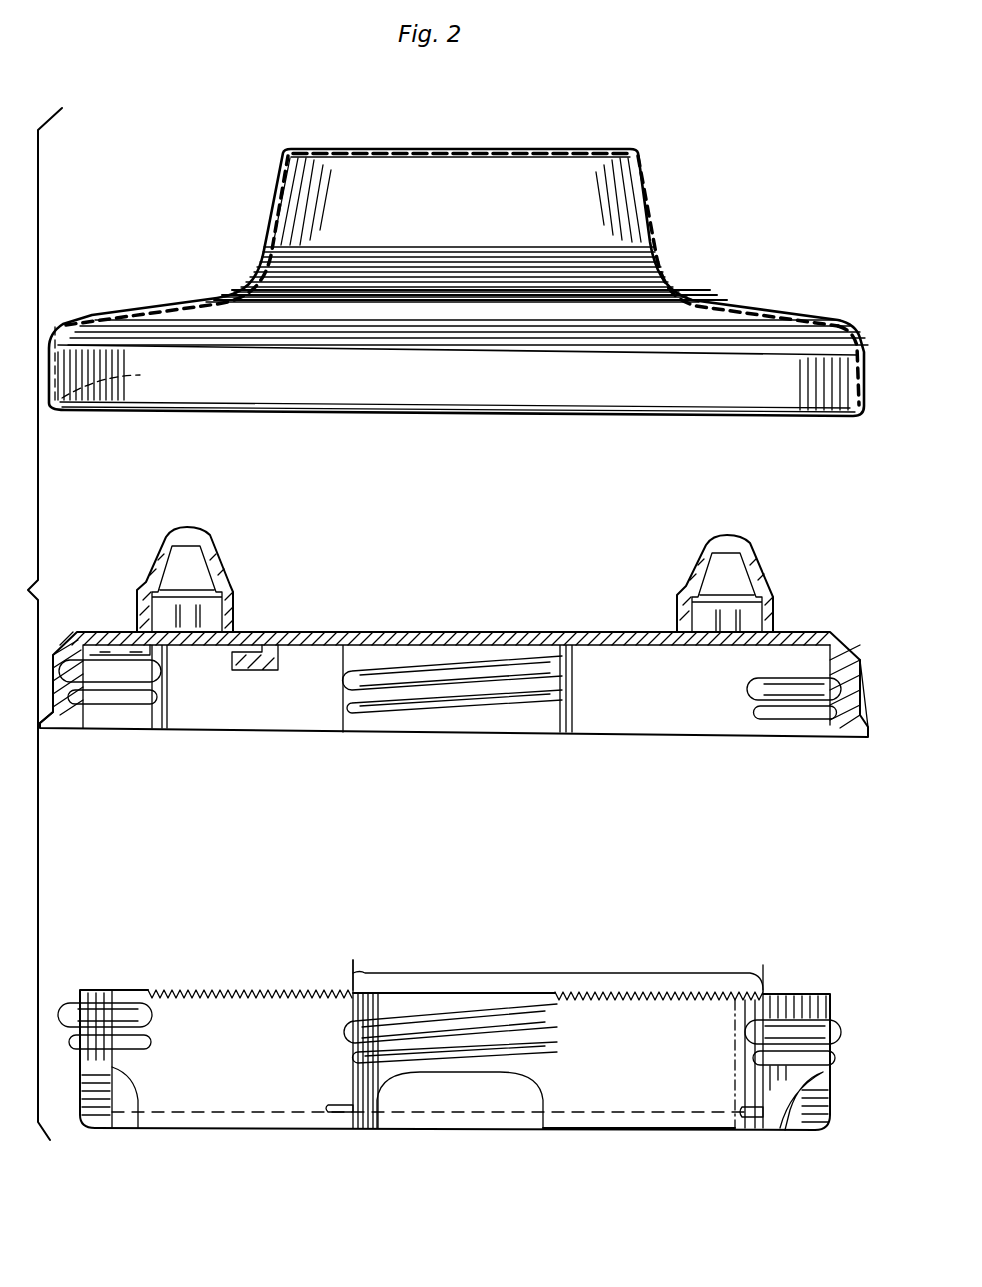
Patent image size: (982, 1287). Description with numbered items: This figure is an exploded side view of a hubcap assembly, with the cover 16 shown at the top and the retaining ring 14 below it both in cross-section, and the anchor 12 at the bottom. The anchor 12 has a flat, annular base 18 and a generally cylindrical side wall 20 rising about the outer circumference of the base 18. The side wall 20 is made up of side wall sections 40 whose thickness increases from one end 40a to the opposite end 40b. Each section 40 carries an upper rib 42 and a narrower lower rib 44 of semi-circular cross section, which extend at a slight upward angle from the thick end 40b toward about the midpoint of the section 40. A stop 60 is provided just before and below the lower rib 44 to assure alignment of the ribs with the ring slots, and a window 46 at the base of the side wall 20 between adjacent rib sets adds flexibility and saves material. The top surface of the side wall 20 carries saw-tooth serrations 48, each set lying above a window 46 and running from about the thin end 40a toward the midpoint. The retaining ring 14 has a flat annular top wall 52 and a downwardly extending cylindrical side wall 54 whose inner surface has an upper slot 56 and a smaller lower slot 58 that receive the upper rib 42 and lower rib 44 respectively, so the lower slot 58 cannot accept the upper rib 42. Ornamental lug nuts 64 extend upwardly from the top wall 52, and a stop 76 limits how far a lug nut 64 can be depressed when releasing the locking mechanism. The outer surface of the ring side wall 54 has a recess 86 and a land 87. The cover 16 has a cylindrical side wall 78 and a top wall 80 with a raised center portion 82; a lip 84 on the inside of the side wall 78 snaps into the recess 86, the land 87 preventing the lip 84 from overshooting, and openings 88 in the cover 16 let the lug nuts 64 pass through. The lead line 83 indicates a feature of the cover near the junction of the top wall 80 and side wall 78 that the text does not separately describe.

The anchor 12 is at (810, 982).
The retaining ring 14 is at (810, 602).
The cover 16 is at (717, 258).
The base 18 is at (528, 1118).
The side wall 20 is at (228, 1093).
The side wall section 40 is at (555, 973).
The end of side wall section 40a is at (771, 964).
The end of side wall section 40b is at (362, 960).
The upper rib 42 is at (70, 1000).
The lower rib 44 is at (70, 1035).
The window 46 is at (460, 1095).
The saw-tooth serrations 48 is at (220, 988).
The top wall 52 is at (280, 632).
The side wall 54 is at (860, 670).
The upper slot 56 is at (562, 664).
The lower slot 58 is at (562, 694).
The stop 60 is at (343, 1120).
The ornamental lug nuts 64 is at (208, 548).
The stop 76 is at (238, 672).
The side wall 78 is at (870, 380).
The top wall 80 is at (795, 328).
The raised center portion 82 is at (530, 150).
The lid shoulder 83 is at (730, 312).
The lip 84 is at (135, 380).
The recess 86 is at (50, 650).
The land 87 is at (50, 730).
The openings 88 is at (185, 300).